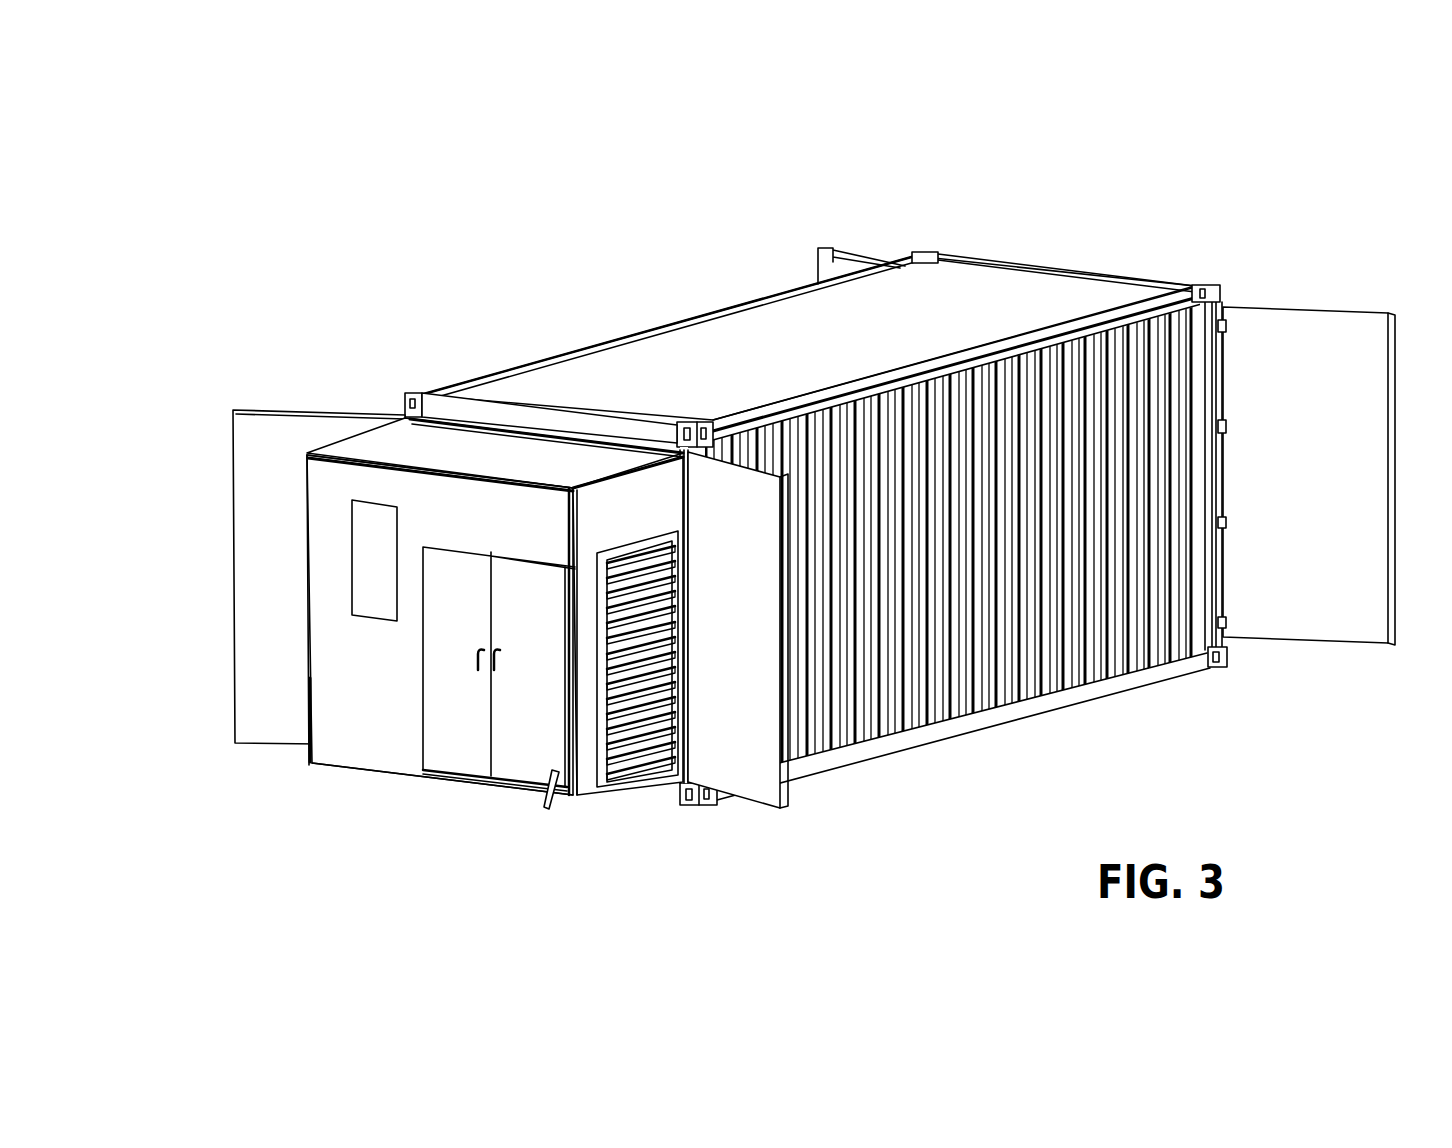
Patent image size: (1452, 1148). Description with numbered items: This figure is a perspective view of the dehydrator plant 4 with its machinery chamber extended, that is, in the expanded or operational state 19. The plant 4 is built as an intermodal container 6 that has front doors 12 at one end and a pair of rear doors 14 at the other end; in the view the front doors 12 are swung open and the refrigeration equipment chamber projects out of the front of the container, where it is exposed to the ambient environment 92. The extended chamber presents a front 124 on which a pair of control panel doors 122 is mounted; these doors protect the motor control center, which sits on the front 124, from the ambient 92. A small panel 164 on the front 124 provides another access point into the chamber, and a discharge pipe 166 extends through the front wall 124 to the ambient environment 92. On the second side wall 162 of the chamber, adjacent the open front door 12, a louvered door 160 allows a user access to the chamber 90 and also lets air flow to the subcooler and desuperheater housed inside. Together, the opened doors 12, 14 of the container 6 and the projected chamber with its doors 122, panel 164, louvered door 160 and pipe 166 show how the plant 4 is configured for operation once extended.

The dehydrator plant 4 is at (814, 450).
The intermodal container 6 is at (763, 325).
The front doors 12 is at (753, 770).
The rear doors 14 is at (1311, 328).
The expanded (operational) state 19 is at (428, 548).
The chamber 90 is at (584, 781).
The ambient environment 92 is at (400, 748).
The control panel doors 122 is at (518, 722).
The front 124 is at (285, 610).
The louvered door 160 is at (640, 763).
The second side wall 162 is at (606, 500).
The small panel 164 is at (368, 577).
The discharge pipe 166 is at (548, 806).